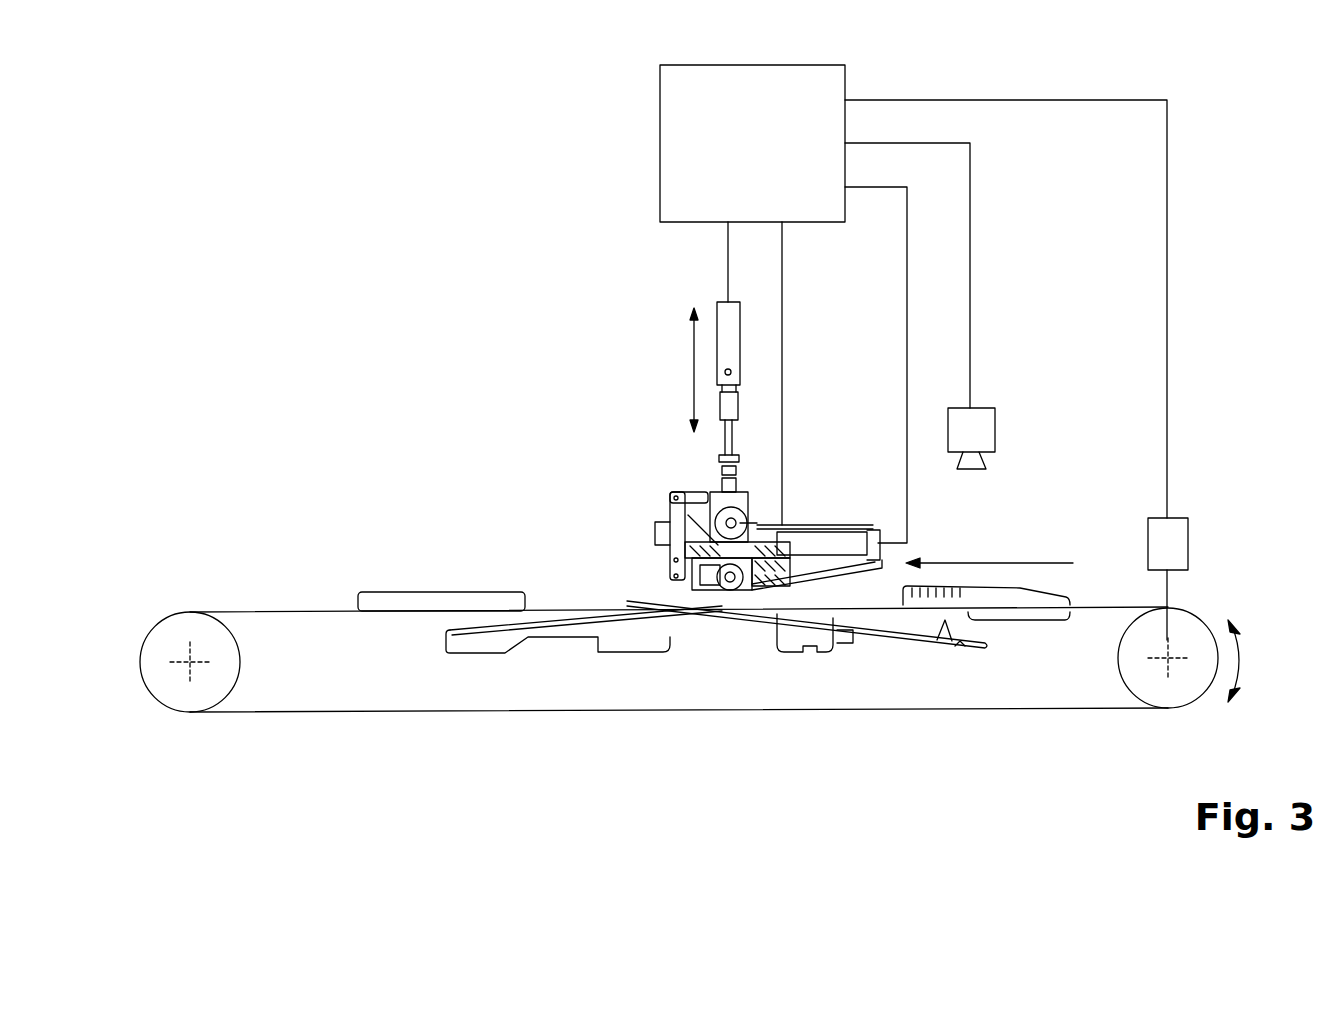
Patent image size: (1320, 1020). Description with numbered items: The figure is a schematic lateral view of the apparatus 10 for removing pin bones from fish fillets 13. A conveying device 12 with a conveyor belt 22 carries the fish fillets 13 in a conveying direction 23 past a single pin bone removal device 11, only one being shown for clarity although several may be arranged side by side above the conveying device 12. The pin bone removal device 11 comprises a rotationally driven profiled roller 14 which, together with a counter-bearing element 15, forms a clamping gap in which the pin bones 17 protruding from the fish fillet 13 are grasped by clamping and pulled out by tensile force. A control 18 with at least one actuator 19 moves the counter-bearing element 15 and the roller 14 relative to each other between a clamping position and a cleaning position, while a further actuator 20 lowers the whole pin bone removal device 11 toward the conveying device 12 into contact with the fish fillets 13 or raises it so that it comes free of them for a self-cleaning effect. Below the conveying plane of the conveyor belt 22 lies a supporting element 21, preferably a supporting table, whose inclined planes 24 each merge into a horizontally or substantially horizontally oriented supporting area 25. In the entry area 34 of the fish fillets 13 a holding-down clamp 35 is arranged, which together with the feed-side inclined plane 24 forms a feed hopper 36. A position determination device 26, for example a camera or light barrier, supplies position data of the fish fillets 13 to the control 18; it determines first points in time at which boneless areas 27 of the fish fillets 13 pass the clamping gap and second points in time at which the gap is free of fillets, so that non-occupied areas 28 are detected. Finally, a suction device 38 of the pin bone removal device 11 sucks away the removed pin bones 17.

The apparatus 10 is at (384, 191).
The pin bone removal device 11 is at (646, 466).
The conveying device 12 is at (203, 530).
The fish fillets 13 is at (412, 592).
The profiled roller 14 is at (720, 595).
The counter-bearing element 15 is at (668, 617).
The pin bones 17 is at (932, 588).
The control 18 is at (665, 151).
The actuator 19 is at (832, 540).
The further actuator 20 is at (720, 335).
The supporting element 21 is at (485, 650).
The conveyor belt 22 is at (293, 610).
The conveying direction 23 is at (1035, 563).
The inclined planes 24 is at (551, 616).
The supporting area 25 is at (733, 614).
The position determination device 26 is at (990, 433).
The boneless areas 27 is at (1020, 622).
The non-occupied areas 28 is at (882, 592).
The entry area 34 is at (777, 614).
The holding-down clamp 35 is at (873, 548).
The feed hopper 36 is at (850, 593).
The suction device 38 is at (655, 527).